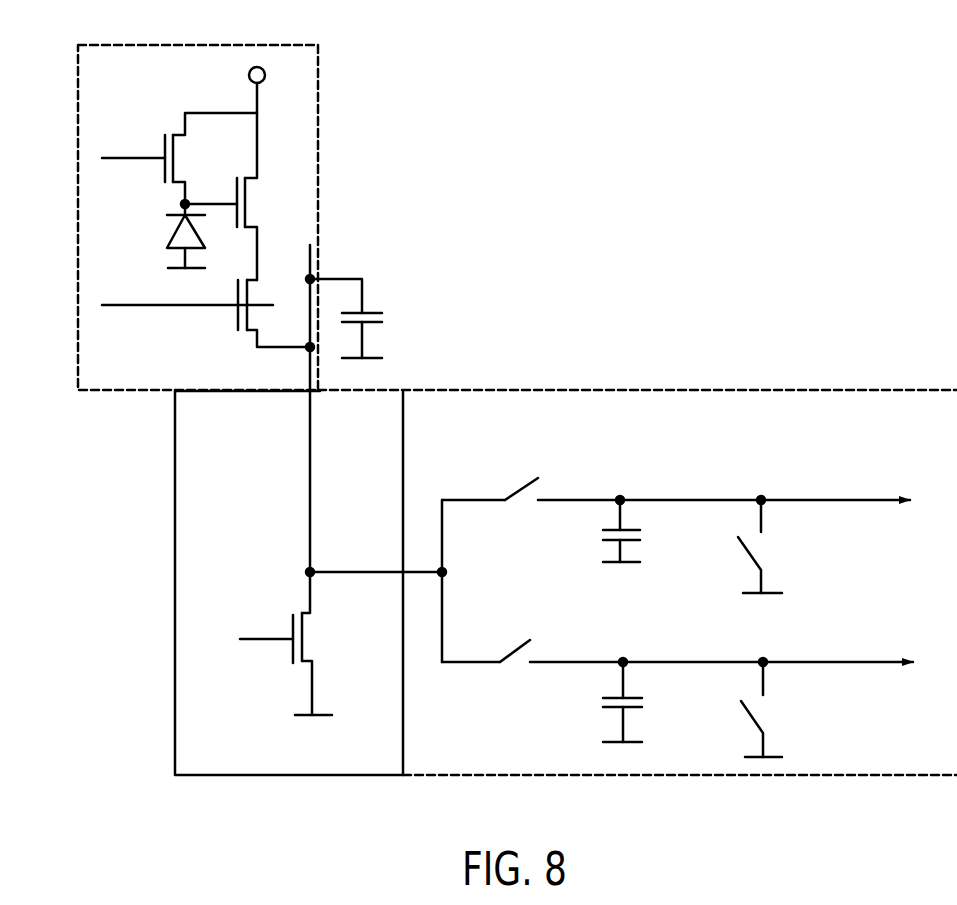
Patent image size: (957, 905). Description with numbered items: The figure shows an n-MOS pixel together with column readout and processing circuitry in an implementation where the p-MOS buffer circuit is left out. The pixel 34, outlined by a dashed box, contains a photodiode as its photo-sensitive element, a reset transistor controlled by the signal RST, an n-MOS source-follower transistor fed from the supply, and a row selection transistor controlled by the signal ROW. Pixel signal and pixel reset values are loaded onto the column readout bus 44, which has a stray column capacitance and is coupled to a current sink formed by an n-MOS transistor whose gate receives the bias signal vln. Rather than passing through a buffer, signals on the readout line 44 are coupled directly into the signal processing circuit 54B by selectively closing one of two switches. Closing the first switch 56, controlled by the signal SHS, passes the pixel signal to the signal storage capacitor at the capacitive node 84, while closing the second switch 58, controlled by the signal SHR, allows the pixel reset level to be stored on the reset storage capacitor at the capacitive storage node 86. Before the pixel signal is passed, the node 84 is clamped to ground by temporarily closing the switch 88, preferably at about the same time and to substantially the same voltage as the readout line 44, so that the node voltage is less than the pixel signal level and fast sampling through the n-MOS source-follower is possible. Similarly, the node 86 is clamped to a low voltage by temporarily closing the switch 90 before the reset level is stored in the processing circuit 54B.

The pixel 34 is at (320, 80).
The column readout bus 44 is at (312, 430).
The signal processing circuit 54B is at (630, 775).
The second switch 58 is at (530, 508).
The first switch 56 is at (510, 669).
The capacitive storage node 86 is at (634, 483).
The capacitive node 84 is at (636, 648).
The switch 90 is at (738, 557).
The switch 88 is at (744, 722).